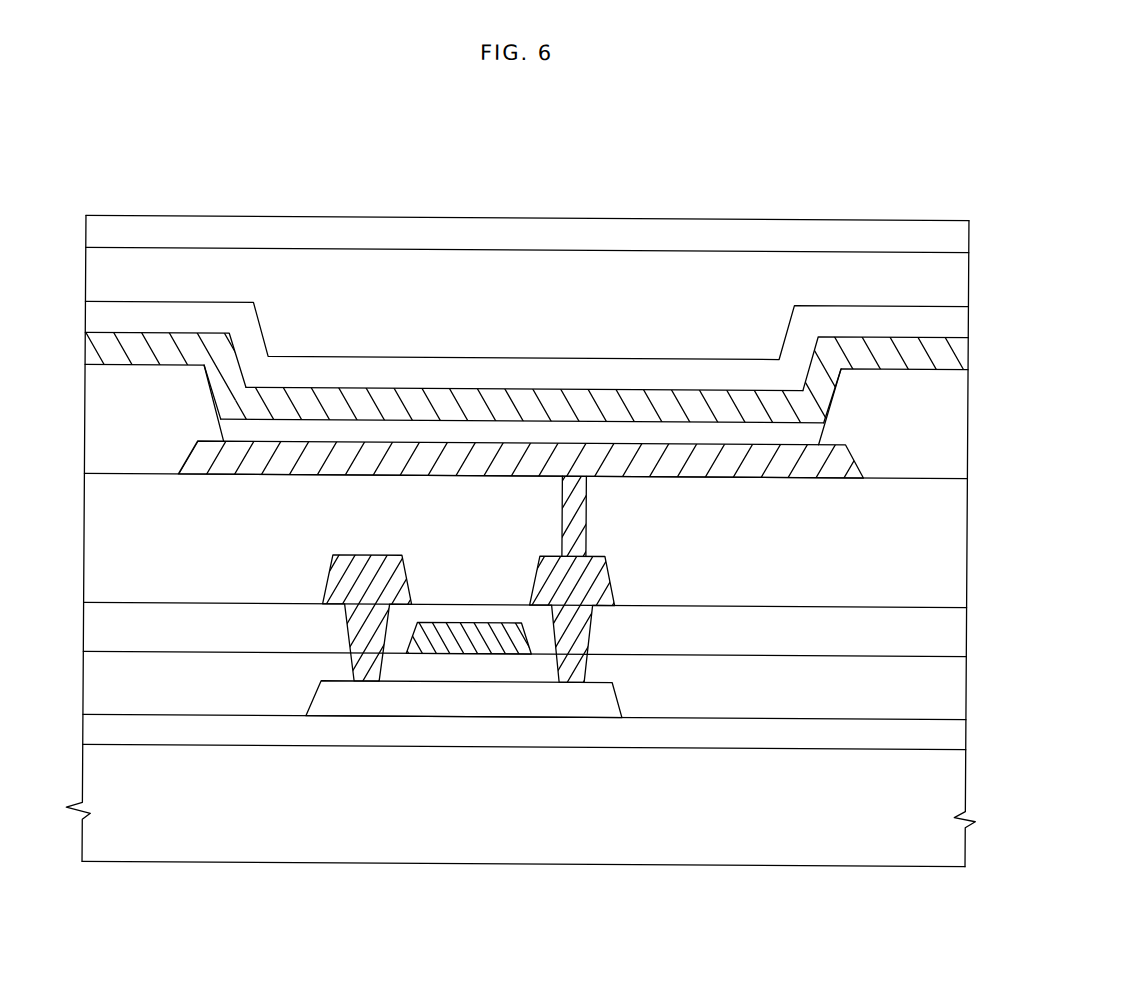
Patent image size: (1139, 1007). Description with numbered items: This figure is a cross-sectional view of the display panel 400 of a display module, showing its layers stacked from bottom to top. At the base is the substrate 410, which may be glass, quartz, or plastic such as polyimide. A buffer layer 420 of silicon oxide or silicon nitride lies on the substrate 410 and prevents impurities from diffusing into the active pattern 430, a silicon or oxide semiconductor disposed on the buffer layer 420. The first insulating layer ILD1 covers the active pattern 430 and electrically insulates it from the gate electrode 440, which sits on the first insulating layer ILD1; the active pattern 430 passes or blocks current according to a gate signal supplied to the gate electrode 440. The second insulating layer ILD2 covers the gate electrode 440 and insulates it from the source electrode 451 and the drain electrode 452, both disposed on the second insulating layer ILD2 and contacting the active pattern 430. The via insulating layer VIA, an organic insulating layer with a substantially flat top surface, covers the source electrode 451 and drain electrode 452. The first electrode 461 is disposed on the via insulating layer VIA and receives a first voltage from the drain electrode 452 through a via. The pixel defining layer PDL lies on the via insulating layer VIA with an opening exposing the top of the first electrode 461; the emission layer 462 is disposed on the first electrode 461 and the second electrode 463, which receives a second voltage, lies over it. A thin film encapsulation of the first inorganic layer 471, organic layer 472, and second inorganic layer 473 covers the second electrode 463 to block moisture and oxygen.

The display panel 400 is at (1078, 198).
The second inorganic layer 473 is at (967, 230).
The organic layer 472 is at (967, 275).
The first inorganic layer 471 is at (967, 310).
The second electrode 463 is at (967, 354).
The emission layer 462 is at (820, 428).
The first electrode 461 is at (847, 450).
The pixel defining layer PDL is at (967, 392).
The via insulating layer VIA is at (967, 554).
The second insulating layer ILD2 is at (967, 632).
The first insulating layer ILD1 is at (967, 692).
The buffer layer 420 is at (967, 730).
The substrate 410 is at (967, 762).
The source electrode 451 is at (372, 600).
The drain electrode 452 is at (577, 600).
The gate electrode 440 is at (503, 645).
The active pattern 430 is at (443, 702).